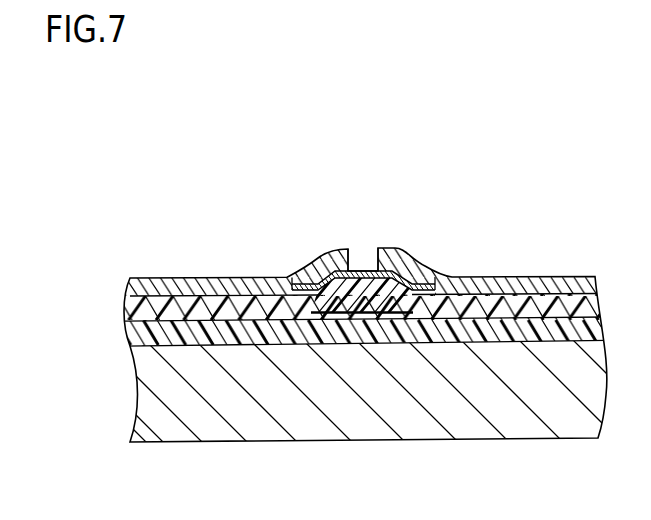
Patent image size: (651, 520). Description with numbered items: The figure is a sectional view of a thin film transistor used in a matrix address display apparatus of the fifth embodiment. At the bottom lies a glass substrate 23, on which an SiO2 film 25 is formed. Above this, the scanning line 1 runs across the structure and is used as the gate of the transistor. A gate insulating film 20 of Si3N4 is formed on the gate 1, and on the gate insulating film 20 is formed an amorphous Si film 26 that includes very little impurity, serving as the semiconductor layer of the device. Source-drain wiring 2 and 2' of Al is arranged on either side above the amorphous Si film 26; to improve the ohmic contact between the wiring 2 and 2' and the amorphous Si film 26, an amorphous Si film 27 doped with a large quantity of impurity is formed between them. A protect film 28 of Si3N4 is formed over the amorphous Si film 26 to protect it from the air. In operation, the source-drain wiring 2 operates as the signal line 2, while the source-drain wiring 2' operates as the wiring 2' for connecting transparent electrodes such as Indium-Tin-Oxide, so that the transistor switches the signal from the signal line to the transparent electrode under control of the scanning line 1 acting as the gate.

The scanning line 1 is at (402, 272).
The source-drain wiring 2 is at (511, 256).
The source-drain wiring 2' is at (218, 260).
The gate insulating film 20 is at (587, 308).
The glass substrate 23 is at (478, 428).
The SiO2 film 25 is at (583, 328).
The amorphous Si film 26 is at (440, 277).
The amorphous Si film 27 is at (300, 275).
The protect film 28 is at (363, 272).